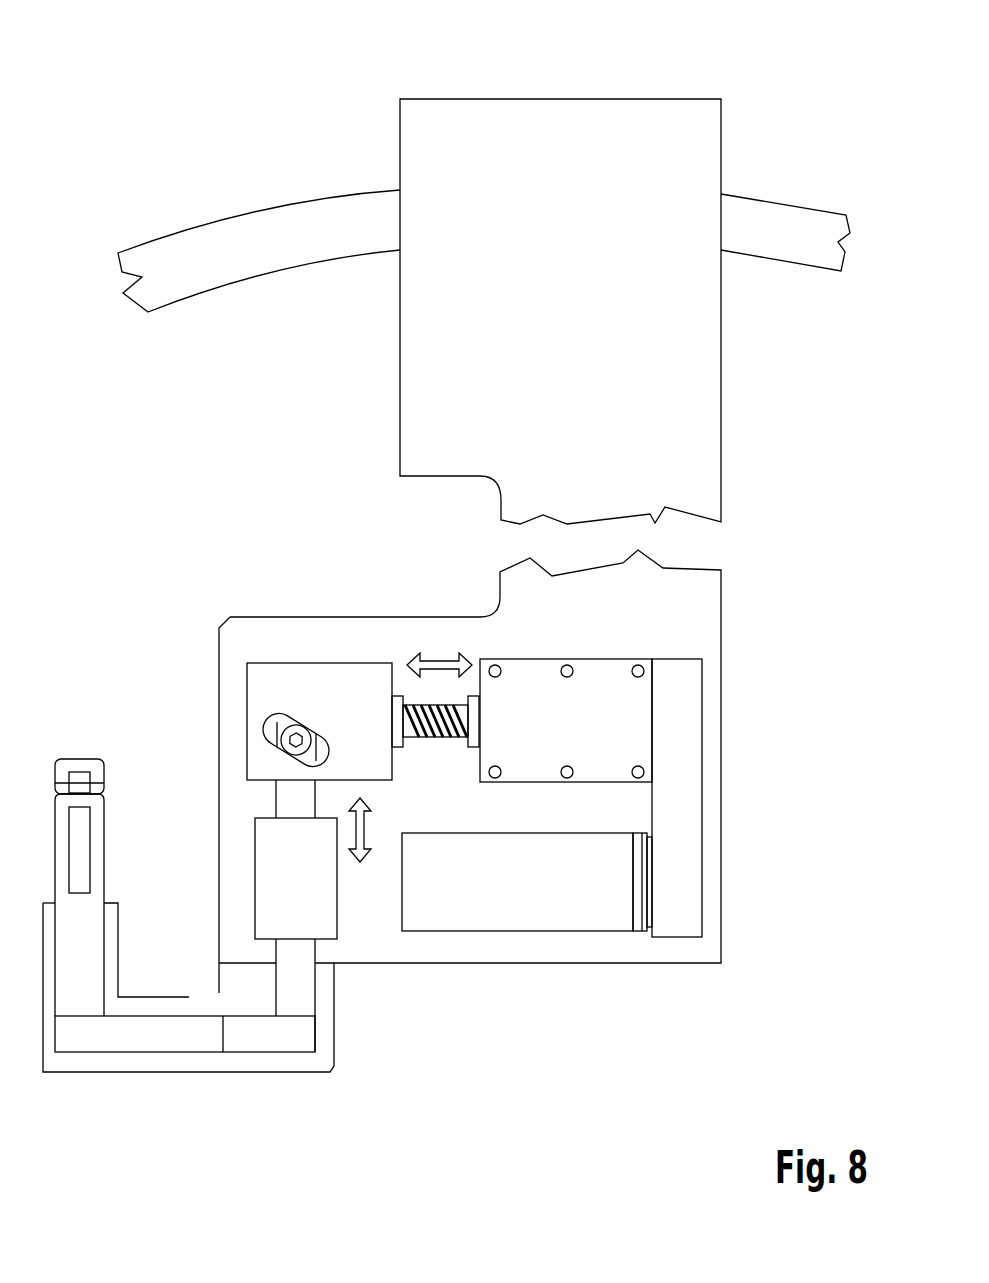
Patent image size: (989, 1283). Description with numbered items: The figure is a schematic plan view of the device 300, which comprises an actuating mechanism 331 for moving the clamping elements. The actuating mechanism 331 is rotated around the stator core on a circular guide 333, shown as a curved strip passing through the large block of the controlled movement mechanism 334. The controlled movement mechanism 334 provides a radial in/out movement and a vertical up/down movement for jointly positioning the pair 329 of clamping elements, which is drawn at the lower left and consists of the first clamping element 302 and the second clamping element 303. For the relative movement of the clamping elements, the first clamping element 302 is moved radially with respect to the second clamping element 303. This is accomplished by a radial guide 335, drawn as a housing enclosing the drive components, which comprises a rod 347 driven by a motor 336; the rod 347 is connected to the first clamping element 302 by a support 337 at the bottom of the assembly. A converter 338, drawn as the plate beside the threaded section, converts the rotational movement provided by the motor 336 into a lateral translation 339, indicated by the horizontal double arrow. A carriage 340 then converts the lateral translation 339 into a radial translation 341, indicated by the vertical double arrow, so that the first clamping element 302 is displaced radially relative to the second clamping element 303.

The device 300 is at (74, 69).
The first clamping element 302 is at (97, 852).
The second clamping element 303 is at (100, 777).
The pair of clamping elements 329 is at (42, 709).
The actuating mechanism 331 is at (810, 137).
The circular guide 333 is at (275, 223).
The controlled movement mechanism 334 is at (605, 335).
The radial guide 335 is at (364, 938).
The motor 336 is at (574, 900).
The support 337 is at (181, 1036).
The converter 338 is at (623, 728).
The lateral translation 339 is at (440, 672).
The carriage 340 is at (320, 673).
The radial translation 341 is at (340, 833).
The rod 347 is at (310, 970).